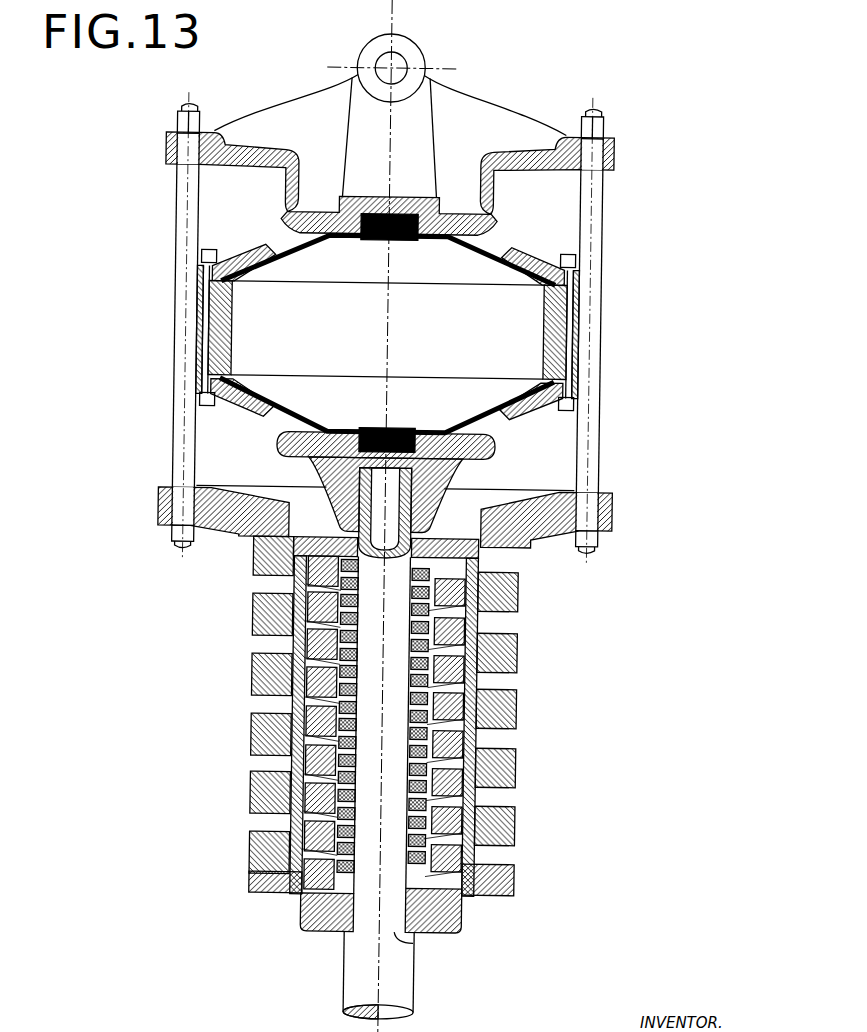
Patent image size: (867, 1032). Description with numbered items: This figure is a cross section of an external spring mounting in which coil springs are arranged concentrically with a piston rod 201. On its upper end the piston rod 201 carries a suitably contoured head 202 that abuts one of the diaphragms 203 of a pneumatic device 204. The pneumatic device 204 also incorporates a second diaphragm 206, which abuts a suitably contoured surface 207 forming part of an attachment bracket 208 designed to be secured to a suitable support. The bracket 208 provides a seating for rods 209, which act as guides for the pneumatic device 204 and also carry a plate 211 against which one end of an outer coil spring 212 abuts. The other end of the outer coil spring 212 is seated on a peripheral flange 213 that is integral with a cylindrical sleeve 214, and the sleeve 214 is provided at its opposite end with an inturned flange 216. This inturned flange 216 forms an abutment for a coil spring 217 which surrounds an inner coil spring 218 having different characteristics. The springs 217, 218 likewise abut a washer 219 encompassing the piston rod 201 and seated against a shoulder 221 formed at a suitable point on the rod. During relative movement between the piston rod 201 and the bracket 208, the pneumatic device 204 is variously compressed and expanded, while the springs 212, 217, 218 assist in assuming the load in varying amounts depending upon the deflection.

The piston rod 201 is at (412, 970).
The head 202 is at (481, 445).
The diaphragm 203 is at (296, 424).
The pneumatic device 204 is at (542, 353).
The diaphragm 206 is at (483, 244).
The contoured surface 207 is at (298, 225).
The attachment bracket 208 is at (489, 117).
The rods 209 is at (176, 231).
The plate 211 is at (610, 515).
The outer coil spring 212 is at (511, 596).
The peripheral flange 213 is at (517, 885).
The cylindrical sleeve 214 is at (487, 740).
The inturned flange 216 is at (322, 550).
The coil spring 217 is at (456, 626).
The inner coil spring 218 is at (431, 683).
The washer 219 is at (331, 921).
The shoulder 221 is at (423, 942).